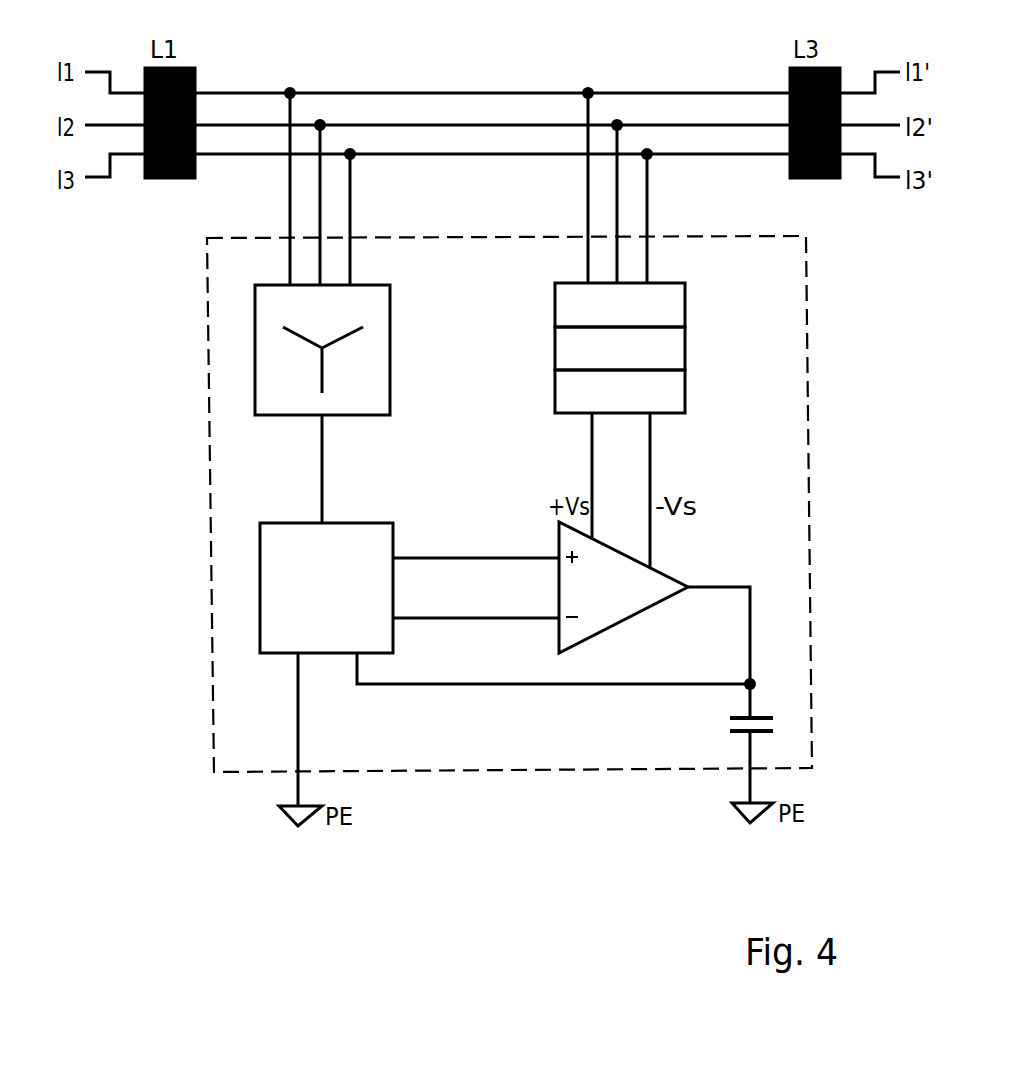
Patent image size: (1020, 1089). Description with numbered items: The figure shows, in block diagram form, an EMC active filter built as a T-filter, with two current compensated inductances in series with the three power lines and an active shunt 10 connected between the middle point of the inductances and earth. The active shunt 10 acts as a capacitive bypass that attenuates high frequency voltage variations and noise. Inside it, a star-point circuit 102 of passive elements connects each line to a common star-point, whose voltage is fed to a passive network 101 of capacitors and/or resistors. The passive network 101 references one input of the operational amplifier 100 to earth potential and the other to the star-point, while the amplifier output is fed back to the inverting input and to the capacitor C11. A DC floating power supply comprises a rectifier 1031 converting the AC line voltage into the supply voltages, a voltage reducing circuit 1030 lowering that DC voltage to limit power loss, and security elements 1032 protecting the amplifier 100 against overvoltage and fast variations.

The active shunt 10 is at (840, 461).
The operational amplifier 100 is at (631, 600).
The passive network 101 is at (348, 603).
The star-point circuit 102 is at (344, 322).
The voltage reducing circuit 1030 is at (620, 305).
The rectifier 1031 is at (620, 348).
The security elements 1032 is at (620, 391).
The capacitor C11 is at (727, 727).